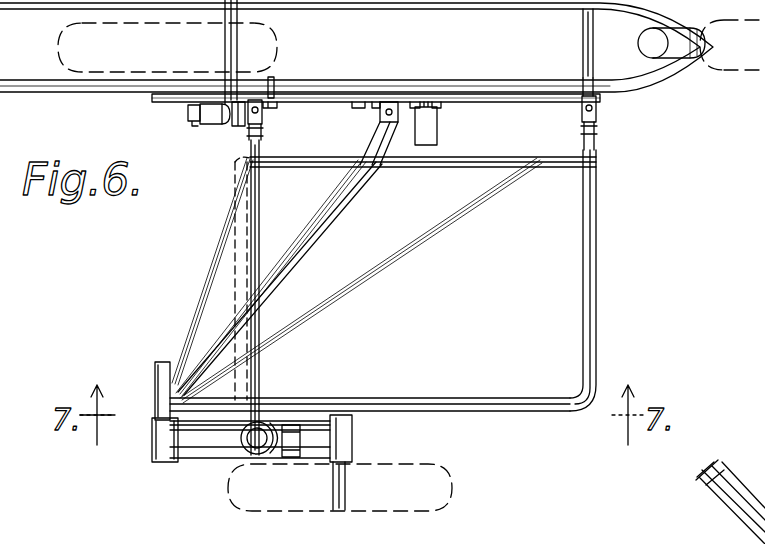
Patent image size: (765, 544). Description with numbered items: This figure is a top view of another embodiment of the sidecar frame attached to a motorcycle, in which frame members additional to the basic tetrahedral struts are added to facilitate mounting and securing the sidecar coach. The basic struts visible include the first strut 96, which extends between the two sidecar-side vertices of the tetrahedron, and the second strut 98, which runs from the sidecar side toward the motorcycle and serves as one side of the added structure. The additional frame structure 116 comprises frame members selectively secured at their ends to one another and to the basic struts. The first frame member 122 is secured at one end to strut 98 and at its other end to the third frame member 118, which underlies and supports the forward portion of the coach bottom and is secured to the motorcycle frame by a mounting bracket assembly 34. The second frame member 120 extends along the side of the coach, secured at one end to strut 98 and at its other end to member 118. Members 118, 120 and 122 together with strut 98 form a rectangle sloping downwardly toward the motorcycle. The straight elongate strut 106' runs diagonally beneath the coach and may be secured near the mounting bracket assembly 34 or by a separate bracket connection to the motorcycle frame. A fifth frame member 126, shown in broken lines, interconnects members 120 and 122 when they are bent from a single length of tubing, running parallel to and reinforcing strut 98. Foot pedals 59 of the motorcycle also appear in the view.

The mounting bracket assembly 34 is at (598, 112).
The foot pedals 59 is at (435, 118).
The first strut 96 is at (205, 398).
The second strut 98 is at (262, 228).
The straight elongate strut 106' is at (361, 280).
The additional frame structure 116 is at (432, 267).
The third frame member 118 is at (598, 320).
The second frame member 120 is at (440, 395).
The first frame member 122 is at (466, 160).
The fifth frame member 126 is at (236, 258).